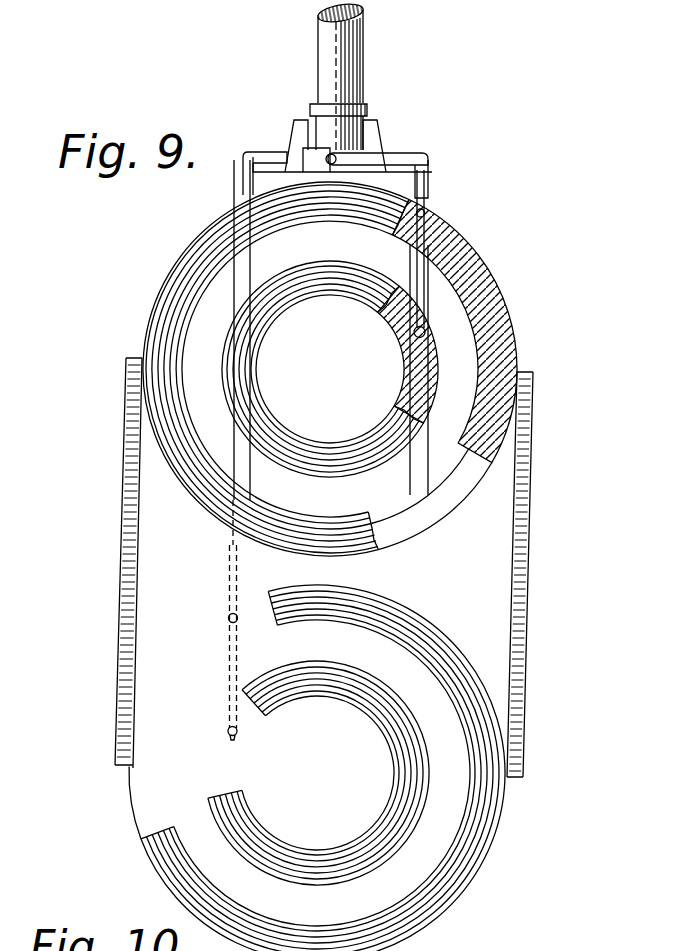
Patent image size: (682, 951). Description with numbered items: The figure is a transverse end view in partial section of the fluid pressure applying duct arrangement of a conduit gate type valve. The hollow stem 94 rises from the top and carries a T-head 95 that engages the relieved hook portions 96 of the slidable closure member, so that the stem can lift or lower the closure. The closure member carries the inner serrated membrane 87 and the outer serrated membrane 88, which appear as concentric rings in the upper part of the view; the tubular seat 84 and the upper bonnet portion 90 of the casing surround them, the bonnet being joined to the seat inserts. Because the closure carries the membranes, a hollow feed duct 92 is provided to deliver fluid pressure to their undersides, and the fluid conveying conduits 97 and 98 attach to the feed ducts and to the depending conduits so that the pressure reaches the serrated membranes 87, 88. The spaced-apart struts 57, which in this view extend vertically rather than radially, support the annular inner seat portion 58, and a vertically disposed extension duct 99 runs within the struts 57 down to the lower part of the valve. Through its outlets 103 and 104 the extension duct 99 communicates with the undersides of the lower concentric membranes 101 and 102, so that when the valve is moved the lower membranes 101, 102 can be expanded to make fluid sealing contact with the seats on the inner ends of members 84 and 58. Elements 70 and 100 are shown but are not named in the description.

The struts 57 is at (430, 270).
The inner seat portion 58 is at (430, 376).
The rod 70 is at (426, 207).
The tubular seat 84 is at (519, 314).
The inner serrated membrane 87 is at (263, 327).
The outer serrated membrane 88 is at (192, 244).
The bonnet portion 90 is at (438, 232).
The feed duct 92 is at (340, 80).
The hollow stem 94 is at (364, 52).
The T-head 95 is at (303, 154).
The relieved hook portions 96 is at (380, 126).
The fluid conveying conduit 97 is at (396, 153).
The fluid conveying conduit 98 is at (262, 151).
The extension duct 99 is at (232, 549).
The ball end 100 is at (424, 328).
The lower concentric membrane 101 is at (420, 613).
The lower concentric membrane 102 is at (370, 676).
The outlet 103 is at (228, 619).
The outlet 104 is at (228, 733).